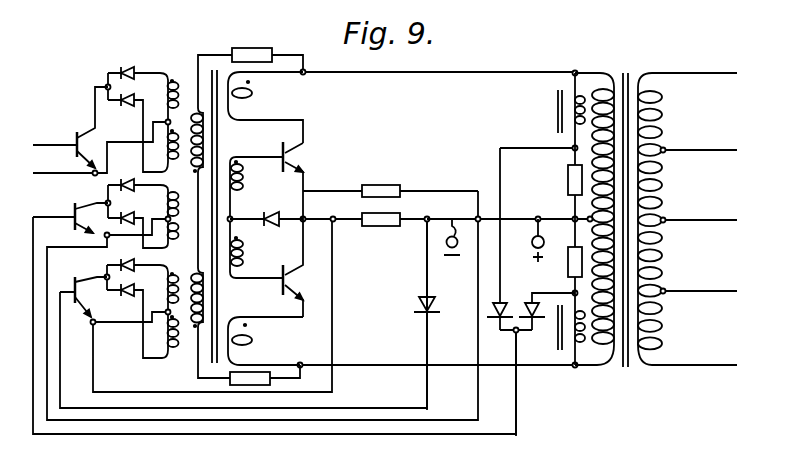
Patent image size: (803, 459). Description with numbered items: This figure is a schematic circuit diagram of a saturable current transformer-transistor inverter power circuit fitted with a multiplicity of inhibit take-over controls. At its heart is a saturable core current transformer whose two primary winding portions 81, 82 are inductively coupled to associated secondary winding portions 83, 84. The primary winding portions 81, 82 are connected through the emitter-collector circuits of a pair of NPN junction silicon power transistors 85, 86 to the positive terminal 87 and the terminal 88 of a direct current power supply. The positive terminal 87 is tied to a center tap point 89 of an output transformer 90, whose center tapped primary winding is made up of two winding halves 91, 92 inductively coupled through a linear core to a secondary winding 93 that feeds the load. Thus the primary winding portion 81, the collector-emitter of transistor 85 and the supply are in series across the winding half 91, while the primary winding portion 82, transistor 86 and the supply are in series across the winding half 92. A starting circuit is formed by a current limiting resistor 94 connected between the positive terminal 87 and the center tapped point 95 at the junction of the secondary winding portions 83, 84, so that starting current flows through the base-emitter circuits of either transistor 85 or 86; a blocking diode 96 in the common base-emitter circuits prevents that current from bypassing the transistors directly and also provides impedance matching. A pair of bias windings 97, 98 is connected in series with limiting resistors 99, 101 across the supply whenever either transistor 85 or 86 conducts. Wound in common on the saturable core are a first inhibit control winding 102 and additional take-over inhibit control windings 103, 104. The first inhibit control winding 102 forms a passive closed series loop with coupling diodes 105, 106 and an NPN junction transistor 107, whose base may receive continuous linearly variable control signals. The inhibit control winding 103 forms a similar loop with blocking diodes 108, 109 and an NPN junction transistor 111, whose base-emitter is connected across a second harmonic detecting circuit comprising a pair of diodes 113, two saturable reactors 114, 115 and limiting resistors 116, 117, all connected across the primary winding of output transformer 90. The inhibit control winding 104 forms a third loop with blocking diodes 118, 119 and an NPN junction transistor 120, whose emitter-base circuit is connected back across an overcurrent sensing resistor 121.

The primary winding portion 81 is at (252, 93).
The primary winding portion 82 is at (252, 342).
The secondary winding portion 83 is at (243, 182).
The secondary winding portion 84 is at (241, 256).
The NPN junction silicon power transistor 85 is at (298, 146).
The NPN junction silicon power transistor 86 is at (295, 278).
The positive terminal 87 is at (531, 242).
The terminal 88 is at (456, 224).
The center tap point 89 is at (588, 218).
The output transformer 90 is at (640, 66).
The primary winding half 91 is at (606, 89).
The primary winding half 92 is at (594, 369).
The secondary winding 93 is at (662, 201).
The current limiting resistor 94 is at (384, 187).
The center tapped point 95 is at (232, 217).
The blocking diode 96 is at (279, 226).
The bias winding 97 is at (205, 133).
The bias winding 98 is at (204, 298).
The limiting resistor 99 is at (246, 52).
The limiting resistor 101 is at (262, 373).
The first inhibit control winding 102 is at (176, 80).
The take-over inhibit control winding 103 is at (184, 206).
The take-over inhibit control winding 104 is at (174, 352).
The coupling diode 105 is at (124, 57).
The coupling diode 106 is at (125, 106).
The NPN junction transistor 107 is at (75, 129).
The blocking diode 108 is at (122, 179).
The blocking diode 109 is at (137, 217).
The NPN junction transistor 111 is at (74, 207).
The diodes 113 is at (531, 300).
The saturable reactor 114 is at (557, 103).
The saturable reactor 115 is at (556, 340).
The limiting resistor 116 is at (567, 179).
The limiting resistor 117 is at (568, 258).
The blocking diode 118 is at (125, 297).
The blocking diode 119 is at (127, 253).
The NPN junction transistor 120 is at (75, 282).
The overcurrent sensing resistor 121 is at (389, 224).